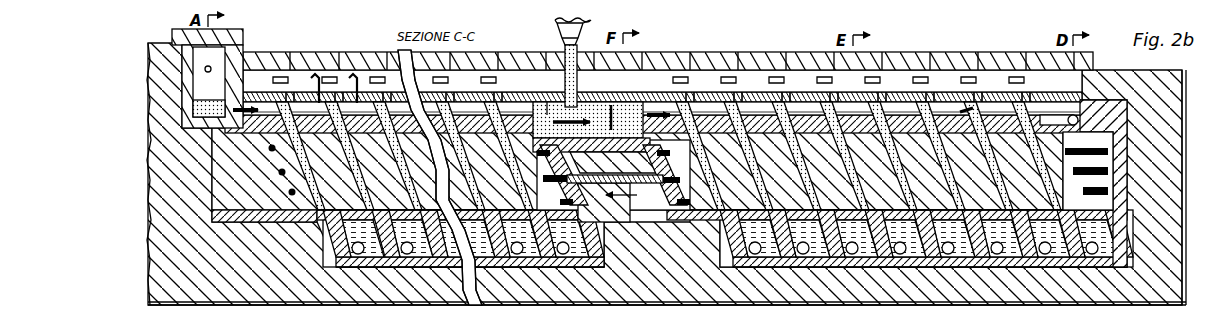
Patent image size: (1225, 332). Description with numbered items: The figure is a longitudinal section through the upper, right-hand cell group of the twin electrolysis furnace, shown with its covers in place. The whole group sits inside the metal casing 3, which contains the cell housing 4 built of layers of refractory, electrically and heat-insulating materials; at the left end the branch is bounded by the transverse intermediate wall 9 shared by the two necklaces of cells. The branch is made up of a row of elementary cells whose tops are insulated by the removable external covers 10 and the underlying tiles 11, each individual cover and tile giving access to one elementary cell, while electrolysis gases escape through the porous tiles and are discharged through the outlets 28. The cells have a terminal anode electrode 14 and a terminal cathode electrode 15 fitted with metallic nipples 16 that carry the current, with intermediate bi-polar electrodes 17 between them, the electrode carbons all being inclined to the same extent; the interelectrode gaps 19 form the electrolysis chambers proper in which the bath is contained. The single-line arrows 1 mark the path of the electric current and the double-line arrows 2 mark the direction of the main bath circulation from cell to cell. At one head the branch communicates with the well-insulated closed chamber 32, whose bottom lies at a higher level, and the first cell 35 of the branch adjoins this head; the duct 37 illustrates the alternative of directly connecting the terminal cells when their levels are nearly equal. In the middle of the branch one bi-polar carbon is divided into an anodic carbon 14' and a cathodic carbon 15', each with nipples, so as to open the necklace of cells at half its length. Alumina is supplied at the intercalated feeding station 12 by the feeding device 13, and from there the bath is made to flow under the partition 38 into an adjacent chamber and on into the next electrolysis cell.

The single-line arrows 1 is at (632, 195).
The double-line arrows 2 is at (547, 102).
The metal casing 3 is at (1186, 233).
The cell housing 4 is at (350, 282).
The transverse intermediate wall 9 is at (157, 210).
The external covers 10 is at (753, 62).
The tiles 11 is at (788, 97).
The feeding station 12 is at (593, 110).
The feeding device 13 is at (557, 32).
The terminal electrode (anode) 14 is at (1138, 171).
The anodic carbon 14' is at (478, 141).
The terminal electrode (cathode) 15 is at (603, 162).
The cathodic carbon 15' is at (700, 118).
The metallic nipples 16 is at (282, 172).
The intermediate bi-polar electrodes 17 is at (316, 90).
The interelectrode gaps 19 is at (890, 158).
The outlets 28 is at (1012, 77).
The chamber 32 is at (207, 85).
The first cell 35 is at (290, 108).
The duct 37 is at (1100, 100).
The partition 38 is at (612, 110).